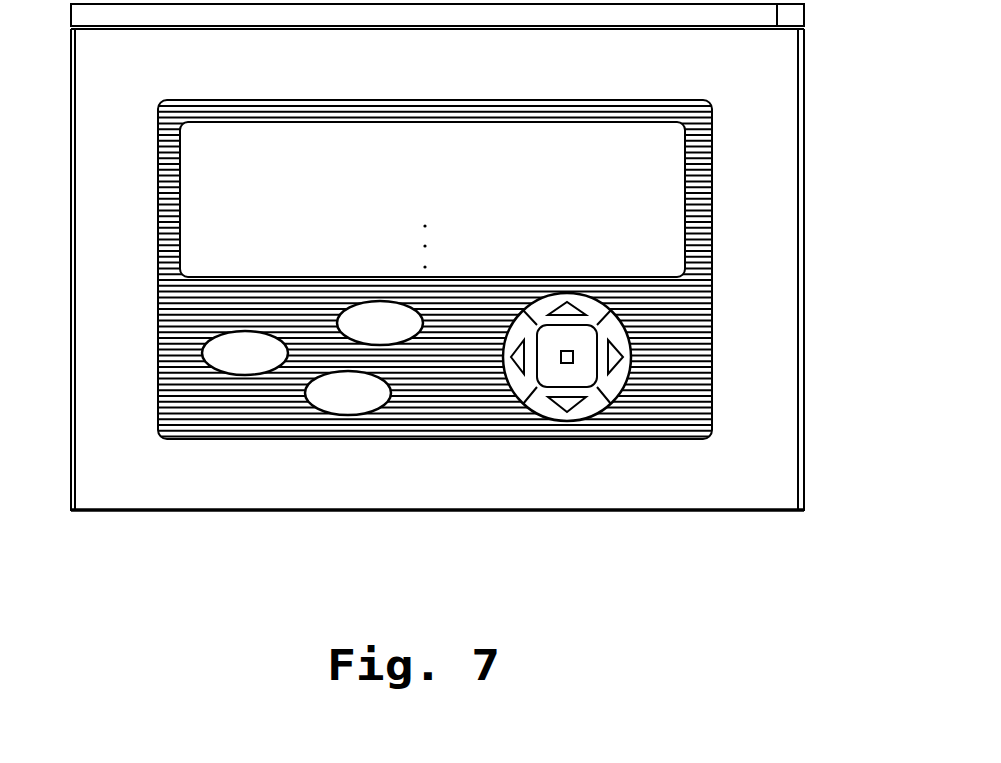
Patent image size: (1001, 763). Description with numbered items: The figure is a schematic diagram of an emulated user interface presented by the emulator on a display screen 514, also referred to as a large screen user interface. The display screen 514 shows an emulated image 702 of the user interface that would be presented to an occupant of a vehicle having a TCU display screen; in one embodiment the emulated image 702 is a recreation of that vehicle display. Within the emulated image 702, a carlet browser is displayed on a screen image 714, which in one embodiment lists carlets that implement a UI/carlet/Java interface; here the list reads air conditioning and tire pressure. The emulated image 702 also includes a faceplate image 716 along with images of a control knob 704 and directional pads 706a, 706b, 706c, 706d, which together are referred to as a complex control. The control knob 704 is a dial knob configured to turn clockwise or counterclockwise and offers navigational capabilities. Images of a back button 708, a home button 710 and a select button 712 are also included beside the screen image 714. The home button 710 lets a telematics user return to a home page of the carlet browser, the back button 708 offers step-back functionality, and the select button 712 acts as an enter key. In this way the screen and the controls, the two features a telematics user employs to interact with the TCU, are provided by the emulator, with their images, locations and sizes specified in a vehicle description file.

The display screen 514 is at (804, 75).
The emulated image 702 is at (713, 273).
The control knob 704 is at (649, 433).
The directional pad 706a is at (608, 308).
The directional pad 706b is at (625, 378).
The directional pad 706c is at (542, 410).
The directional pad 706d is at (513, 382).
The back button 708 is at (318, 413).
The home button 710 is at (202, 355).
The select button 712 is at (337, 318).
The screen image 714 is at (677, 133).
The faceplate image 716 is at (713, 203).